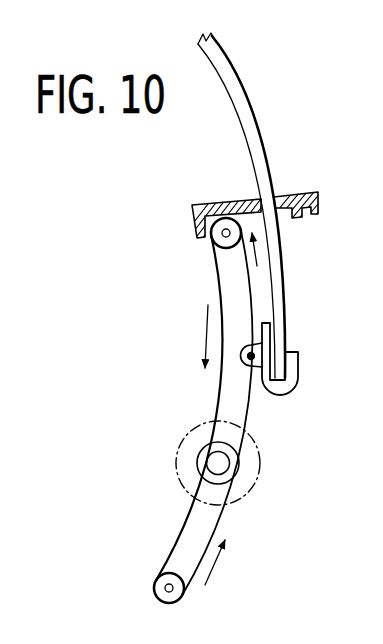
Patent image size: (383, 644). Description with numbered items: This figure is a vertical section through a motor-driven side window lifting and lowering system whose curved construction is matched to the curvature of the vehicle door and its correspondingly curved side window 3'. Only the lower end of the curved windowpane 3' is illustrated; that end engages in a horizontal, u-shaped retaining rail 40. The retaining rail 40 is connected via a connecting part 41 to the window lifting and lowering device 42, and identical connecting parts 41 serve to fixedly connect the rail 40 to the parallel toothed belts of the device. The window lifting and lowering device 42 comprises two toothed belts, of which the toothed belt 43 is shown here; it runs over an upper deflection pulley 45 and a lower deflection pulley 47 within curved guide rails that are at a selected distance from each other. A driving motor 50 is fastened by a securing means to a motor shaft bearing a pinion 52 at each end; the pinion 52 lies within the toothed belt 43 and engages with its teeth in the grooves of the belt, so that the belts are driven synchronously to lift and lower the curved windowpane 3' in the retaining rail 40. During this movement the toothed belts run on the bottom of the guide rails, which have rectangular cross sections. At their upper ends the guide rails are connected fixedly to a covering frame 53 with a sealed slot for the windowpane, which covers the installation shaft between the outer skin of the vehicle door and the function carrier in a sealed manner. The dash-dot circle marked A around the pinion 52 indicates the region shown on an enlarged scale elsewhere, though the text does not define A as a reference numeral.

The side window 3' is at (245, 205).
The retaining rail 40 is at (292, 368).
The connecting part 41 is at (262, 367).
The window lifting and lowering device 42 is at (205, 381).
The toothed belt 43 is at (219, 522).
The upper deflection pulley 45 is at (218, 219).
The lower deflection pulley 47 is at (155, 583).
The driving motor 50 is at (256, 447).
The pinion 52 is at (206, 461).
The covering frame 53 is at (313, 192).
The pivot axis A is at (258, 475).